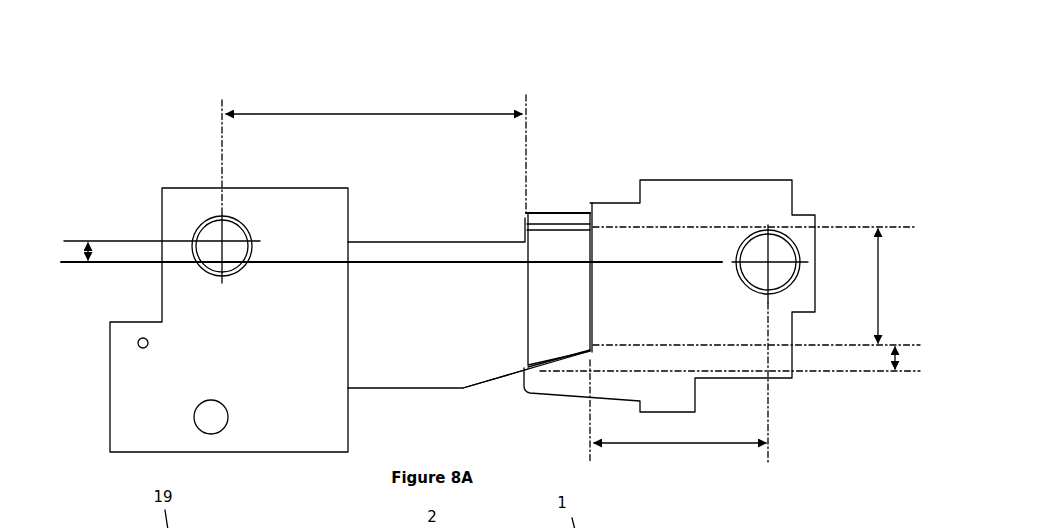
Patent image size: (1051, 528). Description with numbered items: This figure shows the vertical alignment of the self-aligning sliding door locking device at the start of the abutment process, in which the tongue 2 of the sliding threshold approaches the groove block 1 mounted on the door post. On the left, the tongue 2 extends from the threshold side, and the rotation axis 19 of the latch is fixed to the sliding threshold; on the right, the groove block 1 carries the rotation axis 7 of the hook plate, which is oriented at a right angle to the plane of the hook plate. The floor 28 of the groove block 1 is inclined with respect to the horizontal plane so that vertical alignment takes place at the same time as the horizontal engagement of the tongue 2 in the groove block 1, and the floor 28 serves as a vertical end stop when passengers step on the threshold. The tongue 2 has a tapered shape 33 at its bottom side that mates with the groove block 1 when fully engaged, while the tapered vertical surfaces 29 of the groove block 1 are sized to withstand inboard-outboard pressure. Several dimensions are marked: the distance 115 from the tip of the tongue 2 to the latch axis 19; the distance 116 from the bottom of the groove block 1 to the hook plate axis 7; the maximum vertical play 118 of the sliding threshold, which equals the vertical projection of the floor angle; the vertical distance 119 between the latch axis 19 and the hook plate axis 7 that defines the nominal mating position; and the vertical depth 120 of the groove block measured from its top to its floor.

The groove block 1 is at (615, 199).
The tongue 2 is at (428, 238).
The rotation axis of the hook plate 7 is at (755, 252).
The rotation axis of the latch 19 is at (214, 237).
The floor of the groove block 28 is at (552, 369).
The tapered vertical surfaces 29 is at (565, 257).
The tapered shape 33 is at (493, 385).
The distance D7 115 is at (363, 106).
The distance D8 116 is at (678, 451).
The distance D20 118 is at (895, 381).
The distance D21 119 is at (86, 232).
The distance D22 120 is at (899, 268).